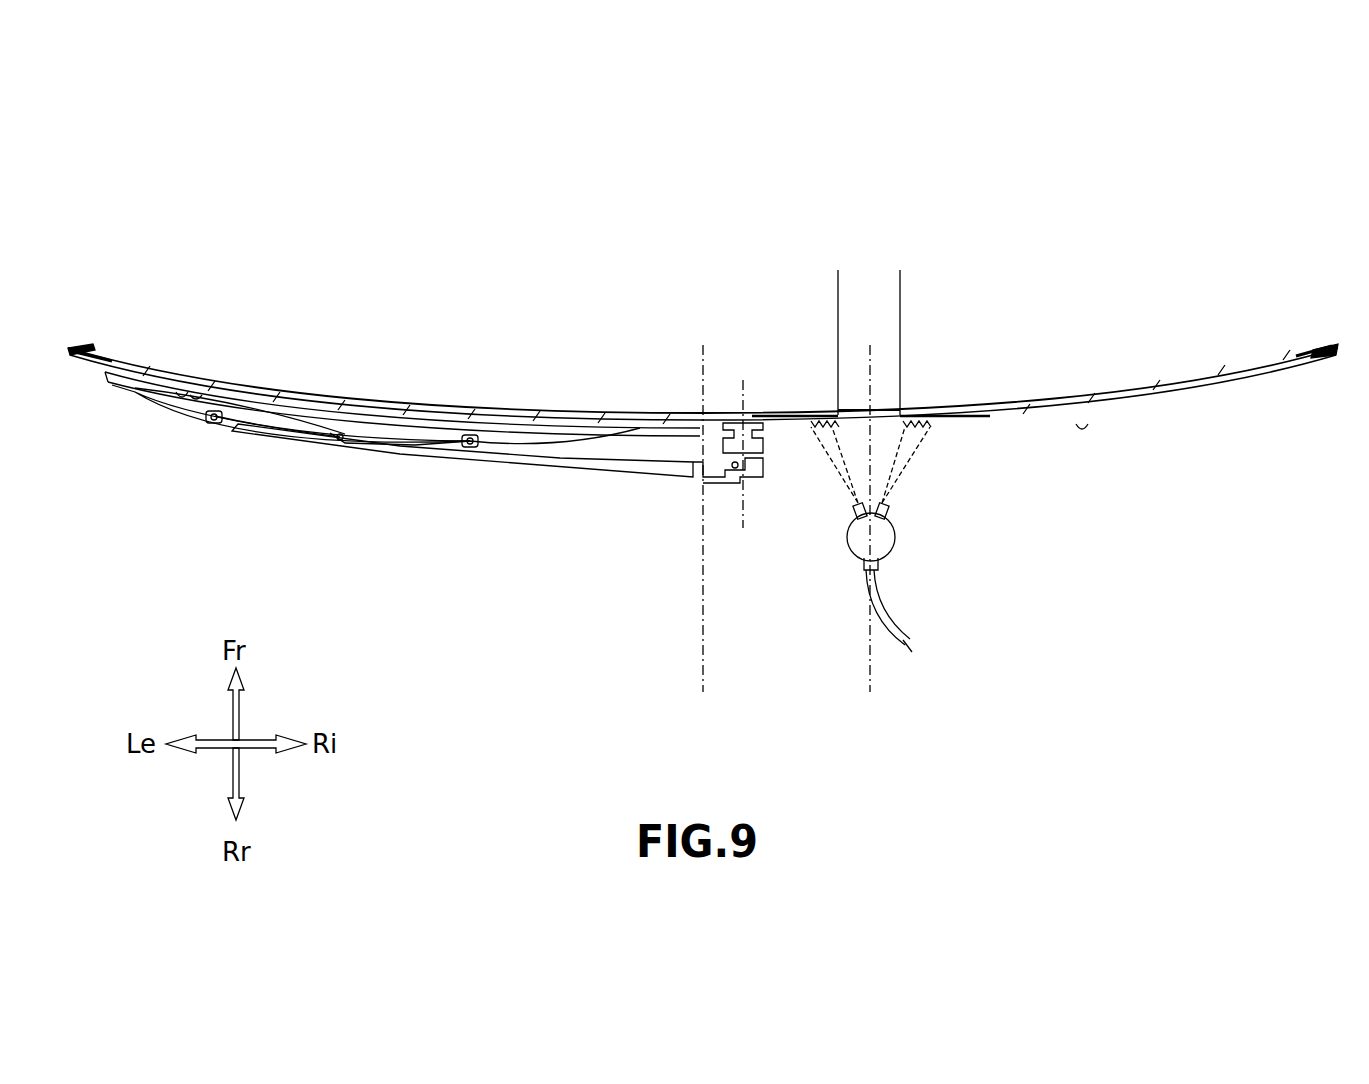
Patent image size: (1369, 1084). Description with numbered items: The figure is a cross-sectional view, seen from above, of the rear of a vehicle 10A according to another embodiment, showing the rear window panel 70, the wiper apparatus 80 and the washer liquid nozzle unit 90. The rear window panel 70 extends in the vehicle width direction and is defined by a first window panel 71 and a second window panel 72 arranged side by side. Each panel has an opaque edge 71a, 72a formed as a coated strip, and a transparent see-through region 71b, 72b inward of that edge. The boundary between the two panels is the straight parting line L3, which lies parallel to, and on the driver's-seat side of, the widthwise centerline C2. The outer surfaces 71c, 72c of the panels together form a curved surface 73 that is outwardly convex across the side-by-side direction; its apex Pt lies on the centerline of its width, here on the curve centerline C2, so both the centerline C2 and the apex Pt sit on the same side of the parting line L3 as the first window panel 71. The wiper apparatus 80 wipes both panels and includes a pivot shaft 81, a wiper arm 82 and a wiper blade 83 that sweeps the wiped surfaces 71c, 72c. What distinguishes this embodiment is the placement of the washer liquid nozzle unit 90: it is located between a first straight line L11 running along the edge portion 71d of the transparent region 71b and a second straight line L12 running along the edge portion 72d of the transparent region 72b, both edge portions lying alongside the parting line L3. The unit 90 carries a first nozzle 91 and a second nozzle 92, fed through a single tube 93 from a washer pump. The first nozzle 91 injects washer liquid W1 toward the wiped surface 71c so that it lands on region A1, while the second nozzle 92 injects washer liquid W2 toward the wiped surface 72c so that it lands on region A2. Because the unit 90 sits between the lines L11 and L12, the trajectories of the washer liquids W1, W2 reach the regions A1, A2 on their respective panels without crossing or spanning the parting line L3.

The rear window panel 70 is at (300, 270).
The first window panel 71 is at (392, 398).
The edge of first window panel 71a is at (83, 345).
The transparent region of first window panel 71b is at (178, 395).
The outer surface of first window panel 71c is at (768, 406).
The edge portion of transparent region of first window panel 71d is at (820, 425).
The second window panel 72 is at (1148, 392).
The edge of second window panel 72a is at (1323, 350).
The transparent region of second window panel 72b is at (1082, 422).
The outer surface of second window panel 72c is at (985, 406).
The edge portion of transparent region of second window panel 72d is at (922, 425).
The curved surface 73 is at (998, 186).
The wiper apparatus 80 is at (258, 440).
The pivot shaft 81 is at (740, 470).
The wiper arm 82 is at (540, 462).
The wiper blade 83 is at (118, 375).
The washer liquid nozzle unit 90 is at (890, 552).
The first nozzle 91 is at (853, 528).
The second nozzle 92 is at (887, 512).
The tube 93 is at (895, 648).
The vehicle 10A is at (1025, 715).
The apex Pt is at (703, 414).
The widthwise centerline C2 is at (703, 668).
The parting line L3 is at (870, 660).
The first straight line L11 is at (836, 288).
The second straight line L12 is at (902, 288).
The region A1 is at (826, 443).
The region A2 is at (915, 440).
The washer liquid W1 is at (838, 475).
The washer liquid W2 is at (908, 472).